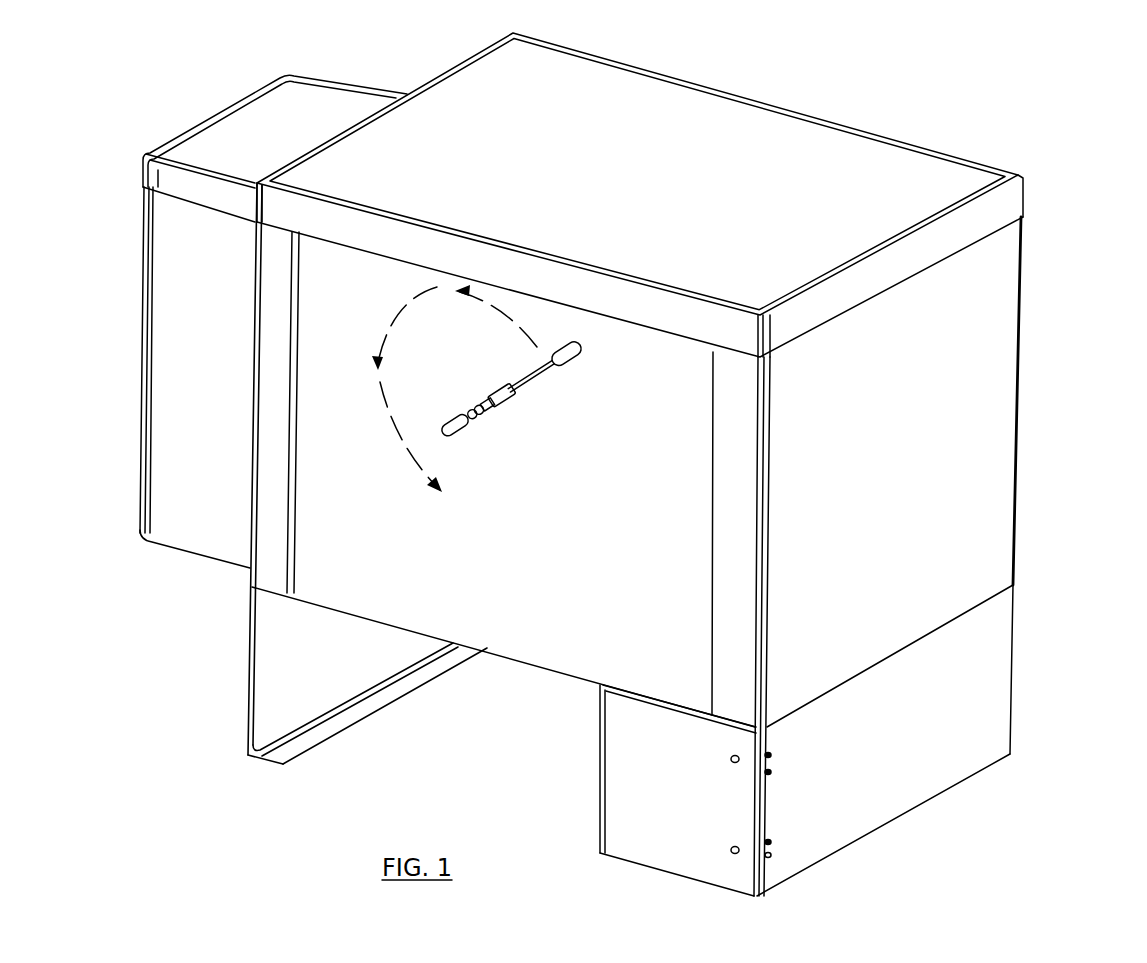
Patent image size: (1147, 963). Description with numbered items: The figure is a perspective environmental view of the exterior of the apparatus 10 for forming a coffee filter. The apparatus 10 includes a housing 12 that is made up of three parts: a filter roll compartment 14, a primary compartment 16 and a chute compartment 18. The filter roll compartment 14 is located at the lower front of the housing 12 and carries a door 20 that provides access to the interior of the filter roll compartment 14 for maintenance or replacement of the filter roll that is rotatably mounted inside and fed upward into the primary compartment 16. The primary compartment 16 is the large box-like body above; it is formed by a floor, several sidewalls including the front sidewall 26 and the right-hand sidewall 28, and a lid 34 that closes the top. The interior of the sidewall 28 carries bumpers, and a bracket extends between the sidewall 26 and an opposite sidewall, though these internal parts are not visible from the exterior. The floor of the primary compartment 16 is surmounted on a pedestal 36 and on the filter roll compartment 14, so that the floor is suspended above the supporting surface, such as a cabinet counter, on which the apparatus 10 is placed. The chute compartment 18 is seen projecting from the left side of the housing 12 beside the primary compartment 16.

The apparatus for forming a coffee filter 10 is at (1028, 369).
The housing 12 is at (1020, 425).
The filter roll compartment 14 is at (842, 773).
The primary compartment 16 is at (588, 538).
The chute compartment 18 is at (181, 406).
The door 20 is at (620, 787).
The sidewall 26 is at (577, 645).
The sidewall 28 is at (973, 507).
The lid 34 is at (630, 186).
The pedestal 36 is at (273, 660).